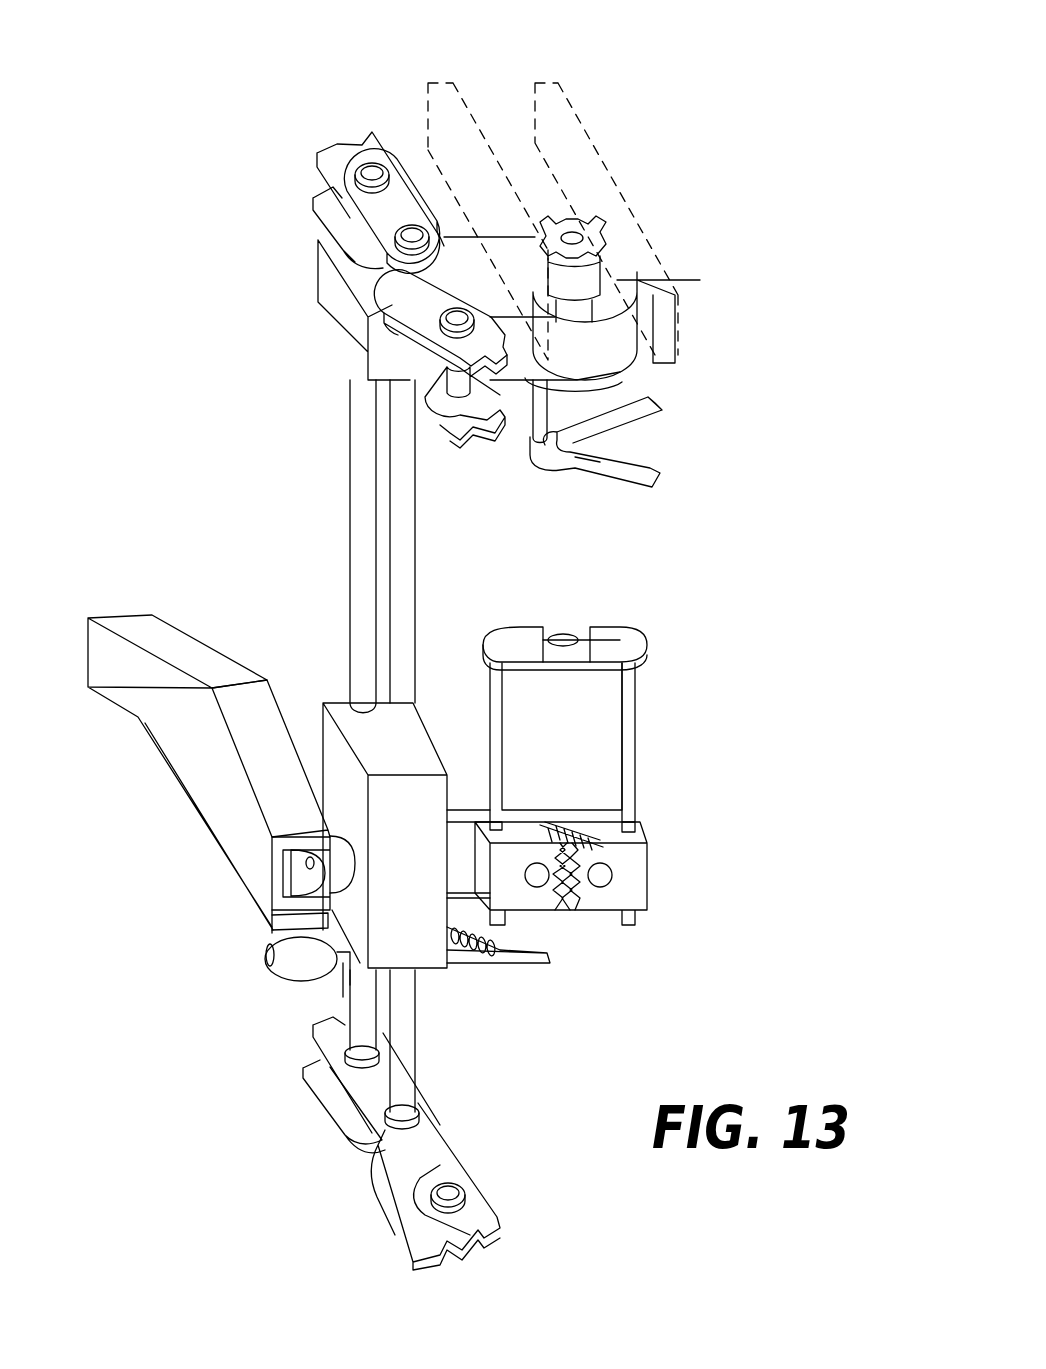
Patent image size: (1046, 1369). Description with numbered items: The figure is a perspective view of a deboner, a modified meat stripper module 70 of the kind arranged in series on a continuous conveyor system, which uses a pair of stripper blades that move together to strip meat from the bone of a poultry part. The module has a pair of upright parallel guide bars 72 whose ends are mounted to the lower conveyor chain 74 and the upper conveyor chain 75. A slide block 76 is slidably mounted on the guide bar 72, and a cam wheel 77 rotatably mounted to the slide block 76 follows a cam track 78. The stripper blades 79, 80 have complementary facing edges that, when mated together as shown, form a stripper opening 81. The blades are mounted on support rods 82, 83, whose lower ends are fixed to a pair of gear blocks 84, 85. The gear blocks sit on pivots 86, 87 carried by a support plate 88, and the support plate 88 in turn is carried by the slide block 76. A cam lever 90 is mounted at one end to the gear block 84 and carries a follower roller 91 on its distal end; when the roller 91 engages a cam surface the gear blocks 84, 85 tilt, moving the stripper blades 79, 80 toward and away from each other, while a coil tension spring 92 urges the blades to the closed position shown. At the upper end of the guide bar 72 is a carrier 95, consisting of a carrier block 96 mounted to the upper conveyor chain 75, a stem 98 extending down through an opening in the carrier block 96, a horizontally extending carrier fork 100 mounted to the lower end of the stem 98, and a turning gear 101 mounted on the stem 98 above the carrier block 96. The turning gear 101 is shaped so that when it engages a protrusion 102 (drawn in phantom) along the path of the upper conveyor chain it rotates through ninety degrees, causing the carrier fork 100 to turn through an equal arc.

The meat stripper module 70 is at (688, 692).
The guide bars 72 is at (400, 552).
The lower conveyor chain 74 is at (410, 1165).
The upper conveyor chain 75 is at (317, 218).
The slide block 76 is at (430, 945).
The cam wheel 77 is at (312, 870).
The cam track 78 is at (235, 788).
The stripper blade 79 is at (506, 645).
The stripper blade 80 is at (617, 640).
The stripper opening 81 is at (563, 634).
The support rod 82 is at (496, 700).
The support rod 83 is at (630, 748).
The gear block 84 is at (518, 830).
The gear block 85 is at (635, 863).
The pivot 86 is at (540, 880).
The pivot 87 is at (605, 882).
The support plate 88 is at (466, 812).
The cam lever 90 is at (342, 962).
The follower roller 91 is at (292, 968).
The coil tension spring 92 is at (165, 750).
The carrier 95 is at (690, 213).
The carrier block 96 is at (690, 280).
The stem 98 is at (540, 413).
The carrier fork 100 is at (655, 482).
The turning gear 101 is at (575, 232).
The protrusion 102 is at (474, 108).